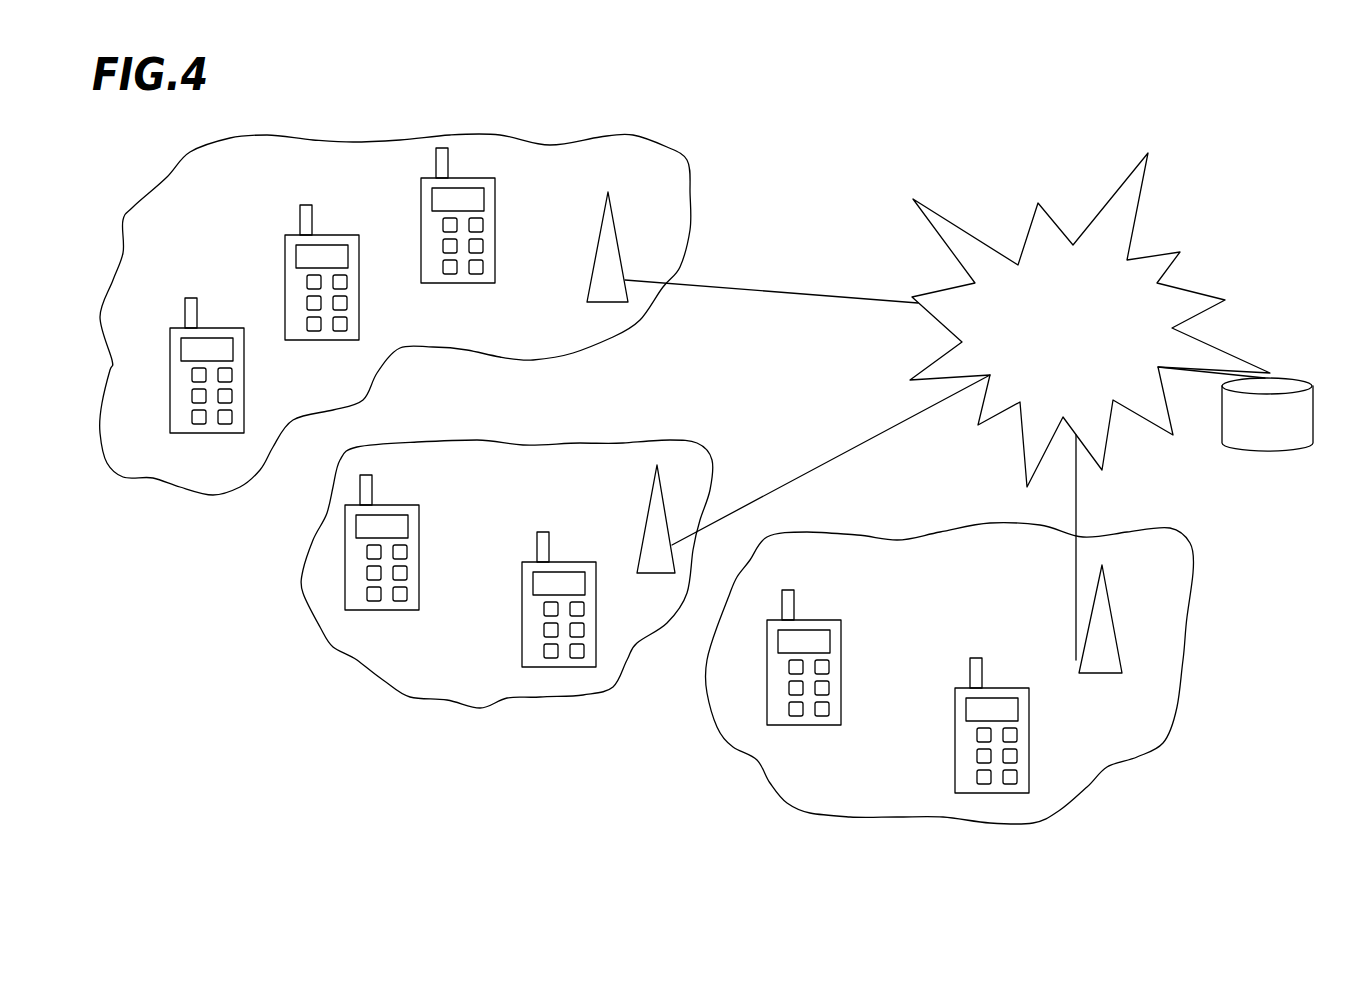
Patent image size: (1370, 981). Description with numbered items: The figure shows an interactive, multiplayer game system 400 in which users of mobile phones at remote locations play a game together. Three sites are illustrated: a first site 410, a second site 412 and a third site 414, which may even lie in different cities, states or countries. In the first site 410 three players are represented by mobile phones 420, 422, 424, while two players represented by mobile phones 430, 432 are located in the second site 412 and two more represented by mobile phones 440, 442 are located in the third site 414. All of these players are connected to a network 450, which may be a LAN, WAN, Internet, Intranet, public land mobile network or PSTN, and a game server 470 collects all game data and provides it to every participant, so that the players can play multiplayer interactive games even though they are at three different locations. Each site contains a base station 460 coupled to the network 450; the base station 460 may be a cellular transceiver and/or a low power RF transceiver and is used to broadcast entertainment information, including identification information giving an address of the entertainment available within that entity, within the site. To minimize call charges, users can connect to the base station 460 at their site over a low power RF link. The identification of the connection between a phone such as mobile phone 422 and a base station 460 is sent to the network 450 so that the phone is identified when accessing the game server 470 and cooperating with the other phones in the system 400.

The interactive multiplayer game system 400 is at (868, 150).
The site 1 410 is at (145, 230).
The site 2 412 is at (520, 463).
The site 3 414 is at (872, 570).
The mobile phone 420 is at (338, 235).
The mobile phone 422 is at (493, 250).
The mobile phone 424 is at (208, 328).
The mobile phone 430 is at (418, 597).
The mobile phone 432 is at (522, 603).
The mobile phone 440 is at (842, 695).
The mobile phone 442 is at (965, 750).
The network 450 is at (1165, 222).
The base station 460 is at (615, 240).
The game server 470 is at (1243, 445).